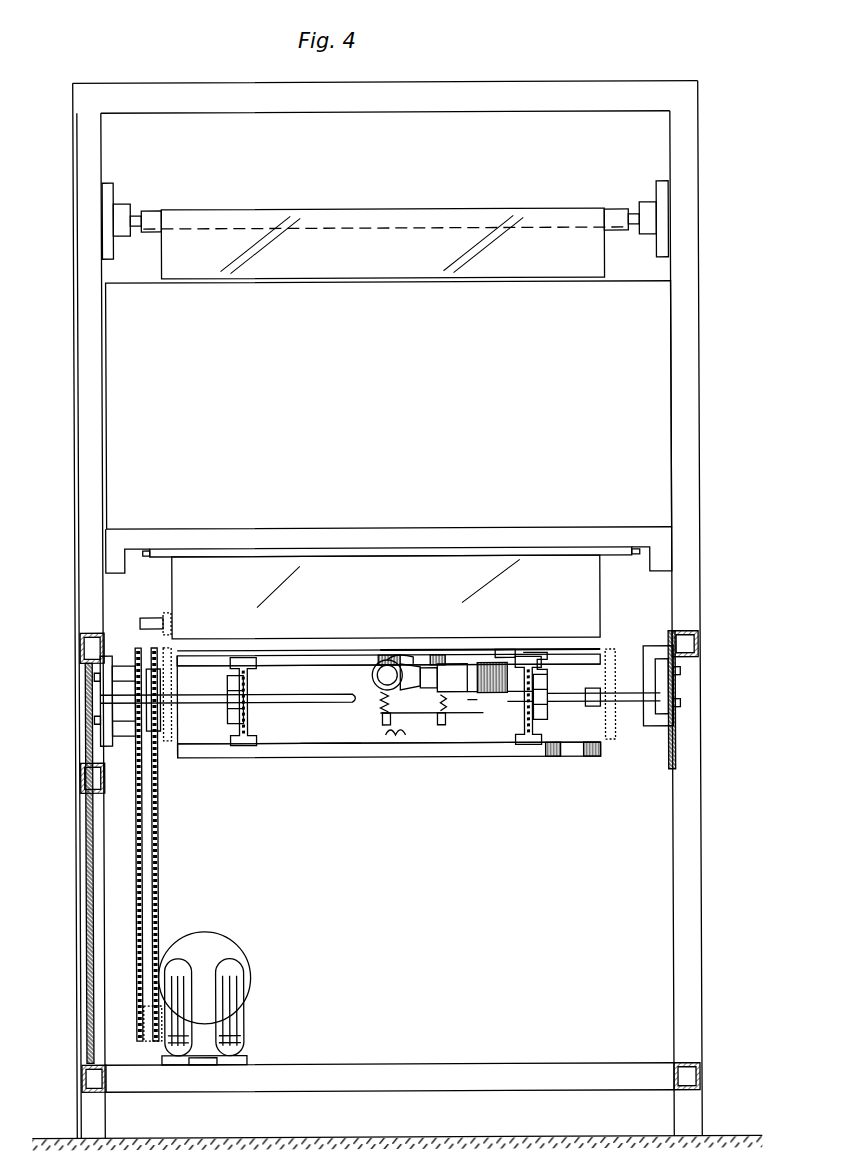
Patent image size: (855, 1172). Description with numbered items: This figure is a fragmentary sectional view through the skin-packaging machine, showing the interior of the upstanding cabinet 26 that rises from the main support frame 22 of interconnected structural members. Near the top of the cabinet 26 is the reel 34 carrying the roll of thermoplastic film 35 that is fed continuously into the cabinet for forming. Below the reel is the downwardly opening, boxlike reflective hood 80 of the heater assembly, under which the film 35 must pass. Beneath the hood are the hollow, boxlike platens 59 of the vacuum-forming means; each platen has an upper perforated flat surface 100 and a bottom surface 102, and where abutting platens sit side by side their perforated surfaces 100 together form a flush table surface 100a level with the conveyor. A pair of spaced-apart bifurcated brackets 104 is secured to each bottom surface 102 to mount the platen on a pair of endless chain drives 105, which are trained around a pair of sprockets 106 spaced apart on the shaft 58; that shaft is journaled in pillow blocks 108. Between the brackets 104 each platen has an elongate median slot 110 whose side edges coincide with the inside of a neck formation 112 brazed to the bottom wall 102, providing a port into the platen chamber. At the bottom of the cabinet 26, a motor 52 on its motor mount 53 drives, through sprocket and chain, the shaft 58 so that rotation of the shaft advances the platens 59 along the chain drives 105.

The main support frame 22 is at (704, 897).
The cabinet 26 is at (657, 40).
The reel 34 is at (560, 208).
The thermoplastic film 35 is at (389, 583).
The motor 52 is at (238, 1032).
The motor mount 53 is at (215, 952).
The shaft 58 is at (180, 757).
The platens 59 is at (330, 745).
The hood 80 is at (389, 405).
The upper perforated flat surface 100 is at (285, 650).
The table surface 100a is at (425, 650).
The bottom surface 102 is at (350, 657).
The bifurcated brackets 104 is at (540, 660).
The endless chain drives 105 is at (246, 722).
The sprockets 106 is at (230, 700).
The pillow blocks 108 is at (105, 725).
The median slot 110 is at (385, 660).
The neck formation 112 is at (508, 655).